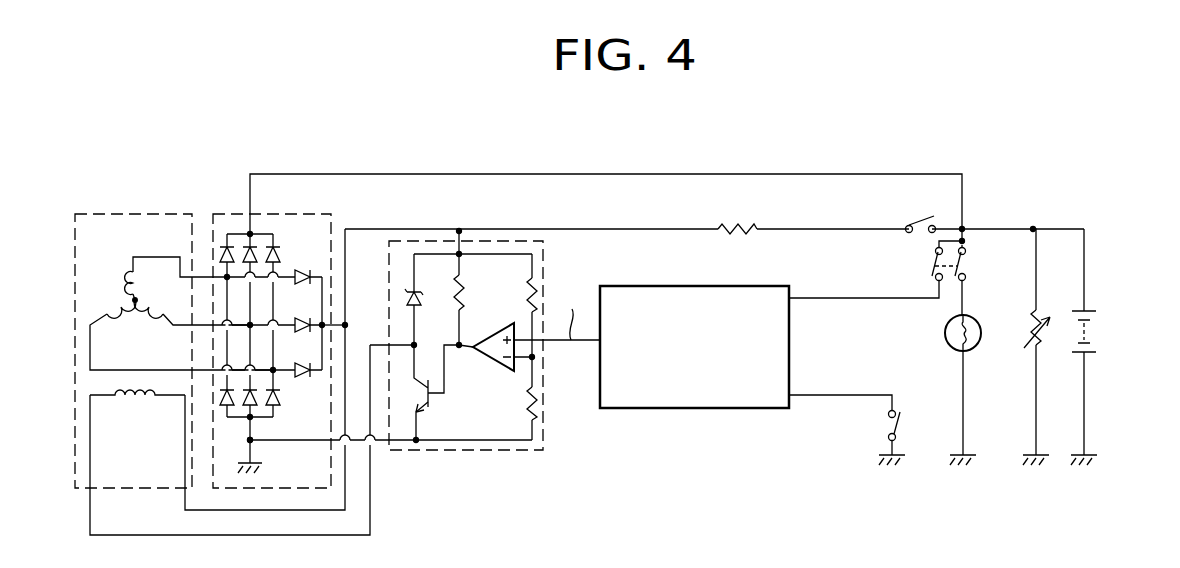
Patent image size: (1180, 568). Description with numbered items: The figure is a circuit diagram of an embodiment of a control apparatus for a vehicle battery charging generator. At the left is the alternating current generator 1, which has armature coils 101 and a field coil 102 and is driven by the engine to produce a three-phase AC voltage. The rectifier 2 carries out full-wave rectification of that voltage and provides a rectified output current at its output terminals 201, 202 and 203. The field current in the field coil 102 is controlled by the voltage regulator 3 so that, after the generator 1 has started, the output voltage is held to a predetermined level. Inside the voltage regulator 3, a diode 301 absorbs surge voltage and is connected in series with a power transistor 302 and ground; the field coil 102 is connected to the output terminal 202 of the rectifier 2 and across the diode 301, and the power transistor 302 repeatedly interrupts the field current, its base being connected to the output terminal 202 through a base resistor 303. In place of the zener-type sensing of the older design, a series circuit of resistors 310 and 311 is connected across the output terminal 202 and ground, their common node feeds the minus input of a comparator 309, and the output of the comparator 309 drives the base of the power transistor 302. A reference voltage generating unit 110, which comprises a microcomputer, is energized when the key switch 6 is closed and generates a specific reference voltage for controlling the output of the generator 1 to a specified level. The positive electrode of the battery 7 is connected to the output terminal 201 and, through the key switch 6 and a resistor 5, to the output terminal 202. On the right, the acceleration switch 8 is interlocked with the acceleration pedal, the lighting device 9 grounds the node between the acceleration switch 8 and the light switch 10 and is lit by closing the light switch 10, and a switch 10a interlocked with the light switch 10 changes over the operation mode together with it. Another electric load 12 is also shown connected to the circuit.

The alternating current generator 1 is at (127, 214).
The rectifier 2 is at (213, 214).
The voltage regulator 3 is at (523, 452).
The resistor 5 is at (718, 224).
The key switch 6 is at (909, 224).
The battery 7 is at (1097, 339).
The acceleration switch 8 is at (902, 424).
The lighting device 9 is at (945, 333).
The light switch 10 is at (965, 264).
The switch 10a is at (930, 265).
The electric load 12 is at (1030, 340).
The armature coils 101 is at (113, 325).
The field coil 102 is at (138, 400).
The reference voltage generating unit 110 is at (689, 409).
The output terminal 201 is at (251, 233).
The output terminal 202 is at (324, 322).
The output terminal 203 is at (252, 419).
The diode 301 is at (418, 292).
The power transistor 302 is at (419, 404).
The base resistor 303 is at (462, 277).
The comparator 309 is at (484, 358).
The resistor 310 is at (535, 280).
The resistor 311 is at (538, 412).